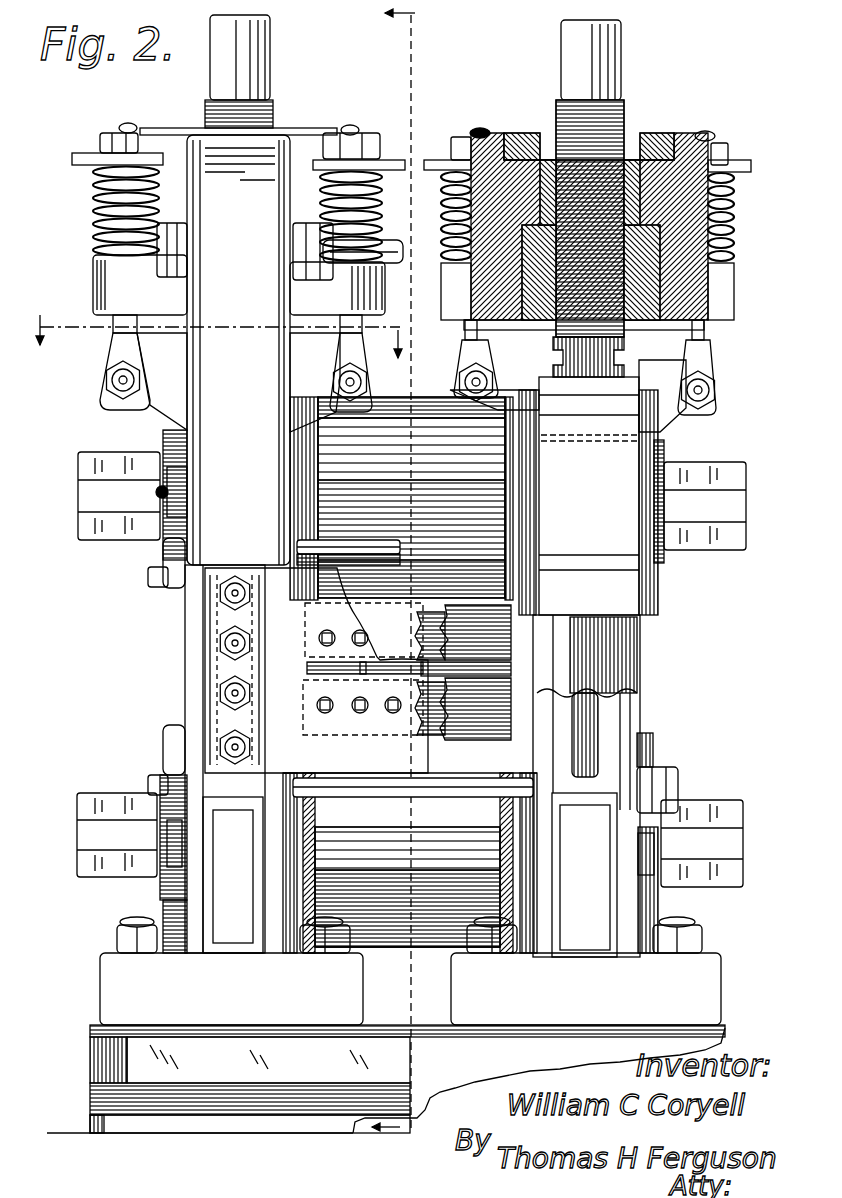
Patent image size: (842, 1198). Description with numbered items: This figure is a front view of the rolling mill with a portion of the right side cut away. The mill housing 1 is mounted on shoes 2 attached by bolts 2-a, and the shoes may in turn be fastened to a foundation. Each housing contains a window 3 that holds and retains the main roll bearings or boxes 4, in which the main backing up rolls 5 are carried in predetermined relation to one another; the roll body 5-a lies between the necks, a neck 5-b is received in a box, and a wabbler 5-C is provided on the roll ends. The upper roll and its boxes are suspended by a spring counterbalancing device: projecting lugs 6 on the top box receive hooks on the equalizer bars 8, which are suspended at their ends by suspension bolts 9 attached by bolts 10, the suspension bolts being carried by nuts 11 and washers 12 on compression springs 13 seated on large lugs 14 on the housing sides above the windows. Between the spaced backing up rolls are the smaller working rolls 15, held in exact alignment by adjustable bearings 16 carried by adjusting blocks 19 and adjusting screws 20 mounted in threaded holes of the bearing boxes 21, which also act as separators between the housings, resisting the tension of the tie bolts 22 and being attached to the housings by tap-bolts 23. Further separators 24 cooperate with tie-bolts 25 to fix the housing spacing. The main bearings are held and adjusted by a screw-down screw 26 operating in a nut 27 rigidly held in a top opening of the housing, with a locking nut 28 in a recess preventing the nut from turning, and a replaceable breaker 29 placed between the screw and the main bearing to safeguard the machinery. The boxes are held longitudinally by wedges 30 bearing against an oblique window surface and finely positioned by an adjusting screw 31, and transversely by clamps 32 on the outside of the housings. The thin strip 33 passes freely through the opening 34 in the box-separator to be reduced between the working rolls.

The mill housing 1 is at (178, 112).
The shoes 2 is at (110, 1050).
The bolts 2-a is at (120, 917).
The window 3 is at (400, 586).
The main roll bearings or boxes 4 is at (666, 726).
The main backing up rolls 5 is at (396, 412).
The roll body 5-a is at (405, 920).
The neck 5-b is at (165, 437).
The wabbler 5-C is at (90, 490).
The projecting lugs 6 is at (613, 405).
The equalizer bars 8 is at (153, 372).
The suspension bolts 9 is at (130, 130).
The bolts 10 is at (118, 380).
The nuts 11 is at (102, 143).
The washers 12 is at (74, 158).
The compression springs 13 is at (96, 205).
The large lugs 14 is at (112, 280).
The working rolls 15 is at (505, 635).
The adjustable bearings 16 is at (420, 628).
The adjusting blocks 19 is at (312, 610).
The adjusting screws 20 is at (328, 638).
The bearing boxes 21 is at (212, 658).
The tie bolts 22 is at (352, 548).
The tap-bolts 23 is at (228, 603).
The separators 24 is at (320, 268).
The tie-bolts 25 is at (392, 250).
The screw-down screw 26 is at (274, 126).
The nut 27 is at (643, 252).
The locking nut 28 is at (656, 142).
The breaker 29 is at (570, 360).
The wedges 30 is at (182, 488).
The adjusting screw 31 is at (160, 496).
The clamps 32 is at (165, 592).
The strip 33 is at (349, 678).
The opening 34 is at (307, 672).